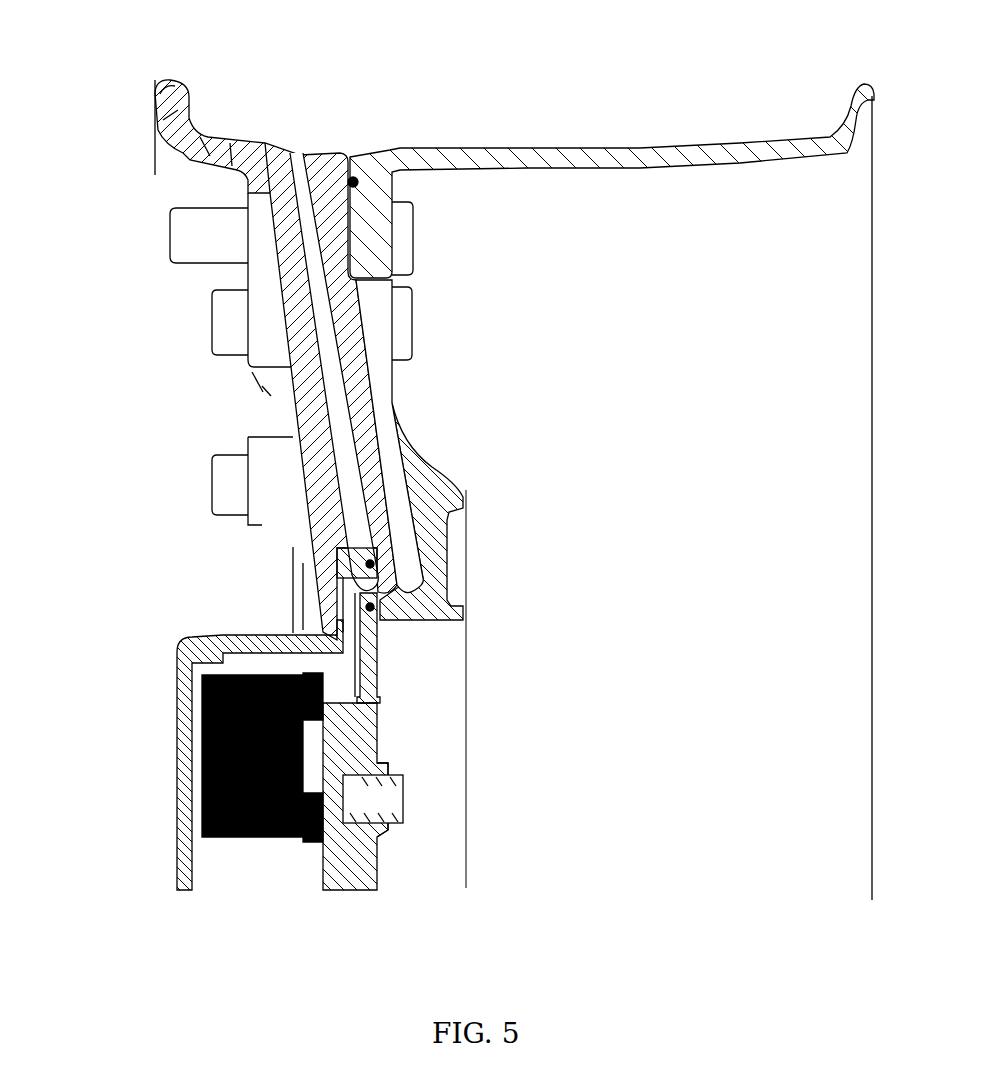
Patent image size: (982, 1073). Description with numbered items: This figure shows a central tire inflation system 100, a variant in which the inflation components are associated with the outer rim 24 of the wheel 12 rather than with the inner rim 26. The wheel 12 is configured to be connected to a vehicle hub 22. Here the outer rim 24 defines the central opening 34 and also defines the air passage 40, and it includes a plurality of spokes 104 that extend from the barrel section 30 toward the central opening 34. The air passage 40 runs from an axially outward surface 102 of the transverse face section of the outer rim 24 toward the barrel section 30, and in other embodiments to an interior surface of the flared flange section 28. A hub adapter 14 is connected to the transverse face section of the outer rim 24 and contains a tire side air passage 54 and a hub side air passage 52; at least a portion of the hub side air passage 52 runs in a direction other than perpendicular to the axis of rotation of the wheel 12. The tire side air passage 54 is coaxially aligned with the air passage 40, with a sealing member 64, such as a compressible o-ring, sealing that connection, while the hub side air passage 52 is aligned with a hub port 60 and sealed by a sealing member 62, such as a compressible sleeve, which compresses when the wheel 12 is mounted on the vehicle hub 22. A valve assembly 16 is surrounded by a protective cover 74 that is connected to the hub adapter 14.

The central tire inflation system 100 is at (131, 305).
The wheel 12 is at (187, 167).
The air passage 40 is at (290, 210).
The flared flange section 28 is at (153, 103).
The outer rim 24 is at (215, 142).
The barrel section 30 is at (235, 150).
The spokes 104 is at (327, 407).
The inner rim 26 is at (551, 260).
The axially outward surface 102 is at (447, 500).
The vehicle hub 22 is at (438, 588).
The hub adapter 14 is at (343, 567).
The tire side air passage 54 is at (353, 583).
The sealing member 64 is at (360, 607).
The central opening 34 is at (380, 697).
The valve assembly 16 is at (200, 753).
The protective cover 74 is at (180, 810).
The hub port 60 is at (373, 802).
The sealing member 62 is at (393, 827).
The hub side air passage 52 is at (333, 812).